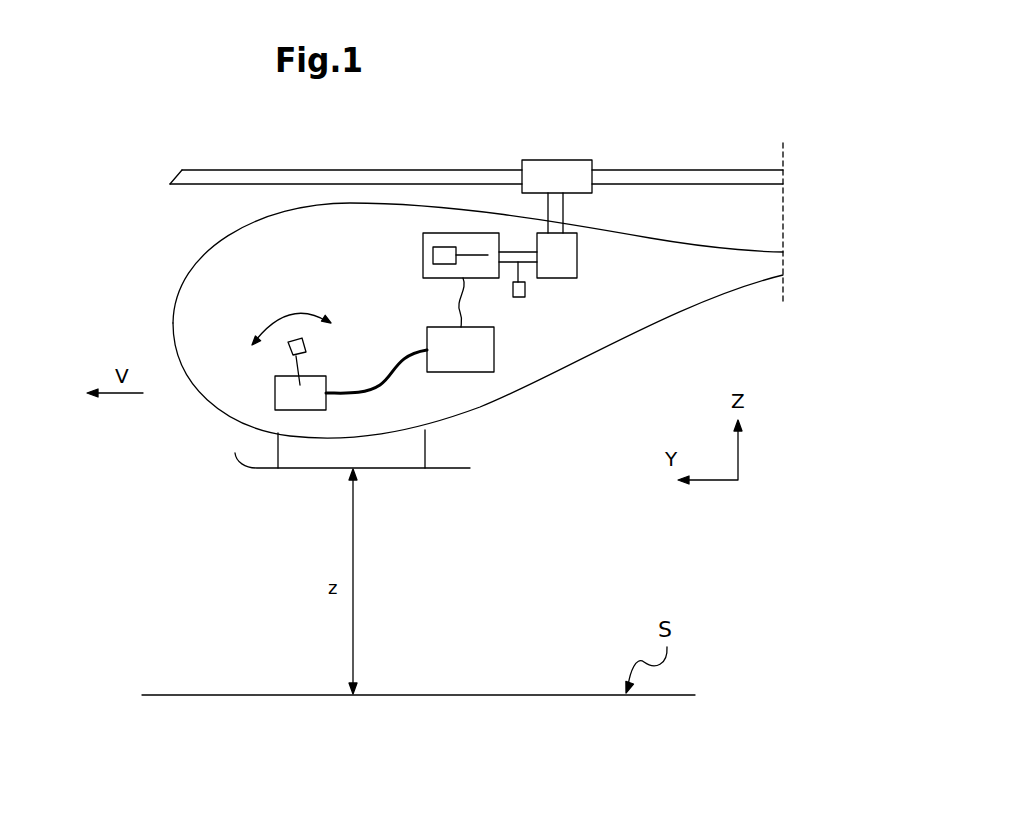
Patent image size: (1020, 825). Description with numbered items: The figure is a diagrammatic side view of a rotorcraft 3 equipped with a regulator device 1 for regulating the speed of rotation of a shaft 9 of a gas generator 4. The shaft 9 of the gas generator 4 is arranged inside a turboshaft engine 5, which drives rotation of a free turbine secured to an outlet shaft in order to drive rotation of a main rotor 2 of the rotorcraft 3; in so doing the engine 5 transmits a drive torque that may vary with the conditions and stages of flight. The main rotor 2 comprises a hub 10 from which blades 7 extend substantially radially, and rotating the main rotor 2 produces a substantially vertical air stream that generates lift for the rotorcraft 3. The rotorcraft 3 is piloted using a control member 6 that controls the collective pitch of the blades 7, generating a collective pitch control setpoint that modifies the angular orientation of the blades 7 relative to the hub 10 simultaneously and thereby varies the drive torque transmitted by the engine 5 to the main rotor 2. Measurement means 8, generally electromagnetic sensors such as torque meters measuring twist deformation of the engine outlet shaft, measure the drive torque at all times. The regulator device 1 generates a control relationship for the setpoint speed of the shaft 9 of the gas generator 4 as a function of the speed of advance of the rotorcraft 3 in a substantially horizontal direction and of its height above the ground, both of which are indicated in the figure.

The regulator device 1 is at (500, 351).
The main rotor 2 is at (585, 157).
The rotorcraft 3 is at (165, 257).
The gas generator 4 is at (433, 252).
The turboshaft engine 5 is at (462, 222).
The control member 6 is at (275, 394).
The blades 7 is at (247, 175).
The measurement means 8 is at (525, 290).
The shaft 9 is at (478, 257).
The hub 10 is at (562, 160).